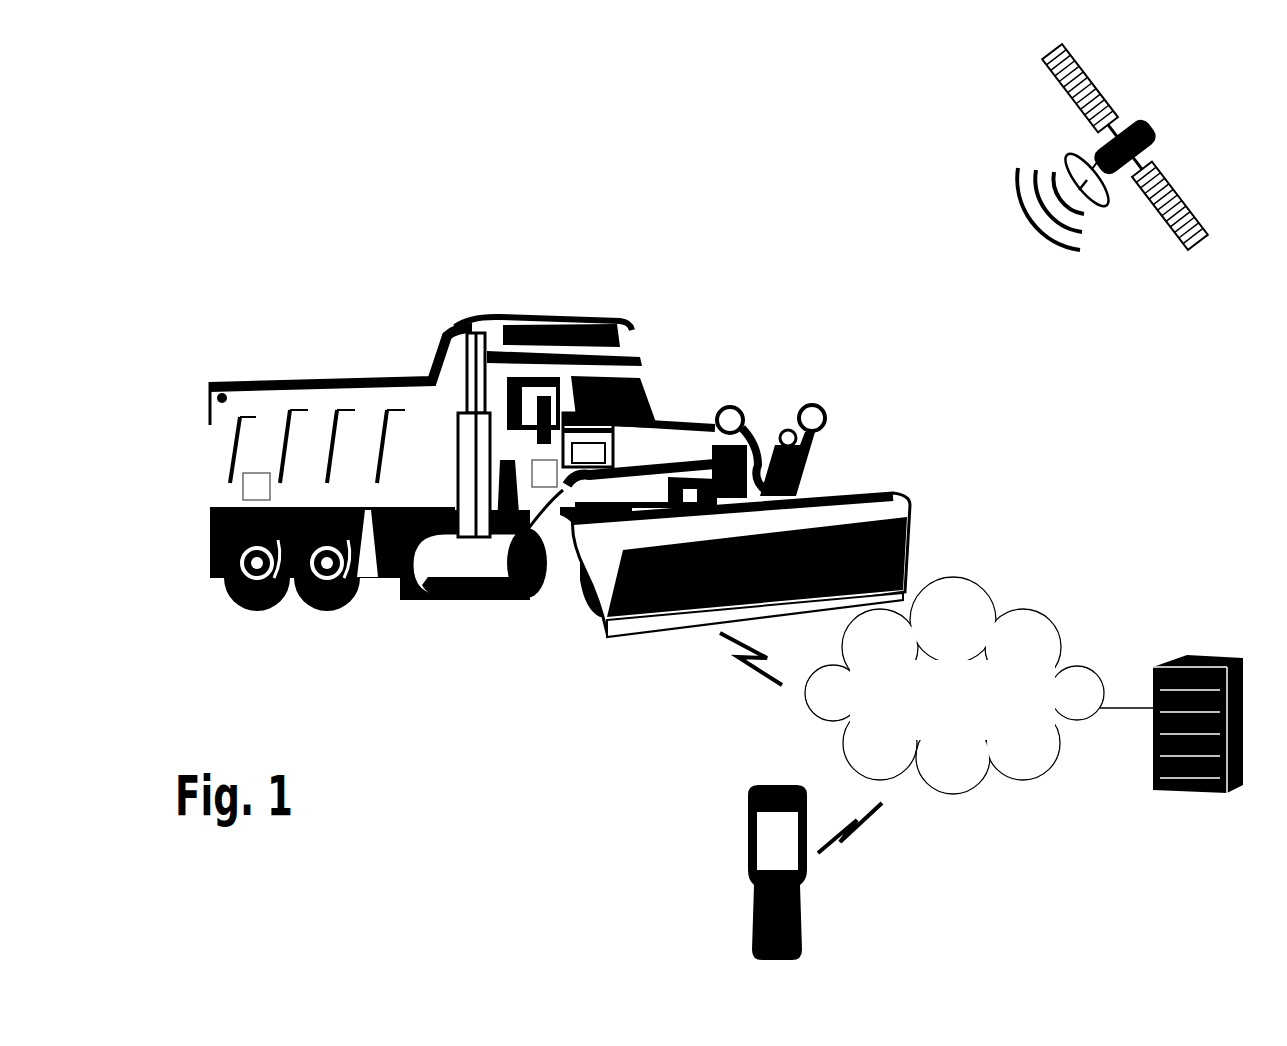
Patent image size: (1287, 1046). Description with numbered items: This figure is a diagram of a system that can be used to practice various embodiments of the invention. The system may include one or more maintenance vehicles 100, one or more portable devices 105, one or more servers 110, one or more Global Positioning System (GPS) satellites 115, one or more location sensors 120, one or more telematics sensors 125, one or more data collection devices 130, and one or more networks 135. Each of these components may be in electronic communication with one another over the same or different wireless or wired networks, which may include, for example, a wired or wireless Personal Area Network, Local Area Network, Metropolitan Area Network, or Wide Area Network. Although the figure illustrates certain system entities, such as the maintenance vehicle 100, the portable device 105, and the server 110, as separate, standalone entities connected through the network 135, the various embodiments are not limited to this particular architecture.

The maintenance vehicle 100 is at (560, 477).
The portable device 105 is at (741, 846).
The server 110 is at (1171, 705).
The Global Positioning System (GPS) satellite 115 is at (1120, 147).
The location sensor 120 is at (496, 557).
The telematics sensor 125 is at (214, 465).
The data collection device 130 is at (646, 406).
The network 135 is at (954, 685).